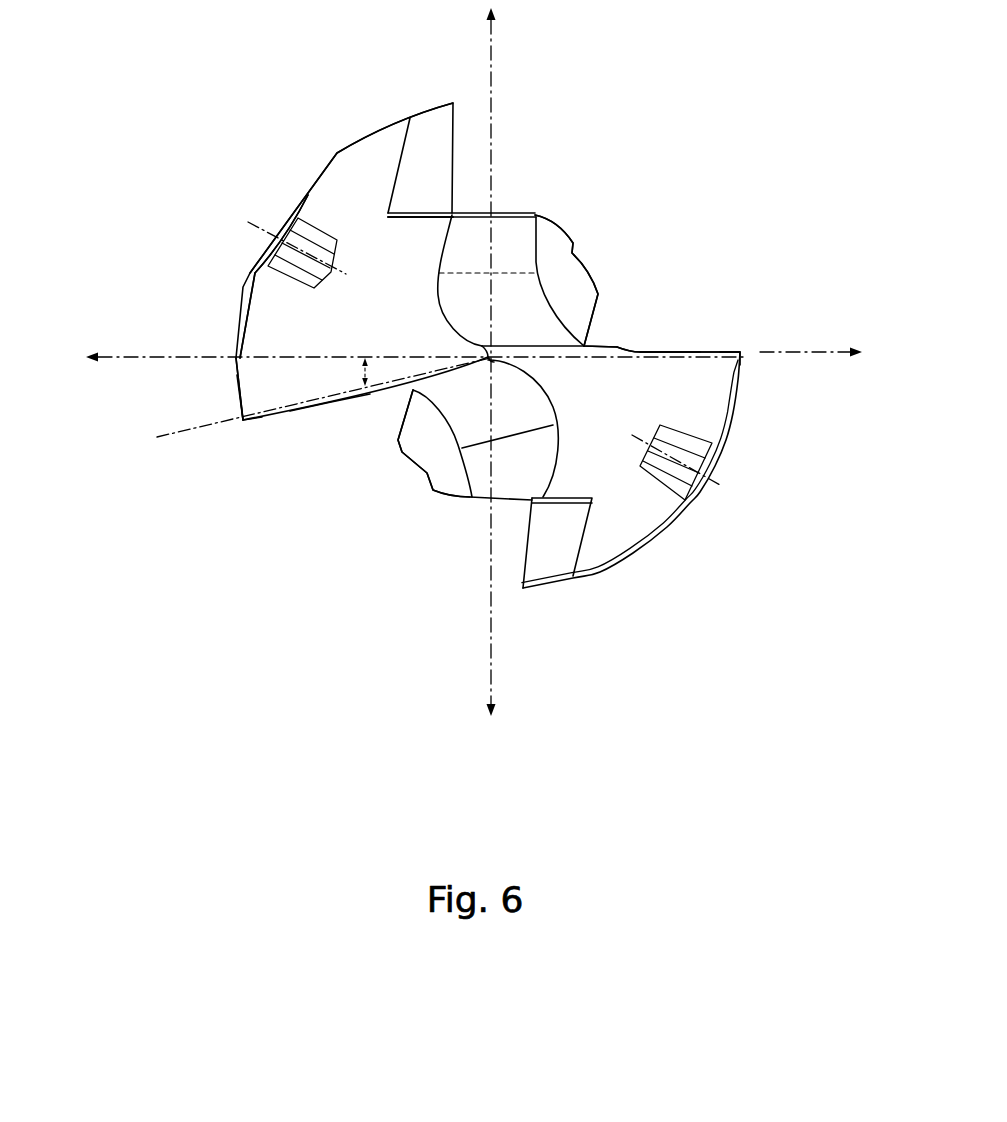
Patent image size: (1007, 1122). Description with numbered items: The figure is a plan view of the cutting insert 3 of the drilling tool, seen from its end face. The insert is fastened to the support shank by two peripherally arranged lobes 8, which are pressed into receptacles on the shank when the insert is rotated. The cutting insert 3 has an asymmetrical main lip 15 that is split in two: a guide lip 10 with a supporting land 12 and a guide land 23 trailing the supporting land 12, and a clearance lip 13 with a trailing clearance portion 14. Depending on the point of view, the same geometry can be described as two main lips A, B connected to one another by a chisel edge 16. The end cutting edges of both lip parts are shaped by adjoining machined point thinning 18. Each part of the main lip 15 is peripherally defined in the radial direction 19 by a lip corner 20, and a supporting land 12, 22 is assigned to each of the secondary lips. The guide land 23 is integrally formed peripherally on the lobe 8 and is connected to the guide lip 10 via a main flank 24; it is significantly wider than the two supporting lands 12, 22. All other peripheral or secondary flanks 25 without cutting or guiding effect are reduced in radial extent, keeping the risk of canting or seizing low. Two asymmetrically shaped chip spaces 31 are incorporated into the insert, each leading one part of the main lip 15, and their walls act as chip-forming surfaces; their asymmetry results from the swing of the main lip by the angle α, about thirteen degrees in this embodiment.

The cutting insert 3 is at (281, 646).
The lobe 8 is at (385, 150).
The guide lip 10 is at (280, 421).
The supporting land 12 is at (236, 372).
The clearance lip 13 is at (701, 351).
The clearance portion 14 is at (746, 382).
The main lip 15 is at (613, 340).
The chisel edge 16 is at (495, 359).
The point thinning 18 is at (537, 327).
The radial direction 19 is at (493, 42).
The lip corner 20 is at (243, 424).
The supporting land 22 is at (746, 355).
The guide land 23 is at (350, 147).
The main flank 24 is at (392, 299).
The secondary flank 25 is at (283, 211).
The chip space 31 is at (622, 220).
The main lip A is at (313, 401).
The main lip B is at (645, 351).